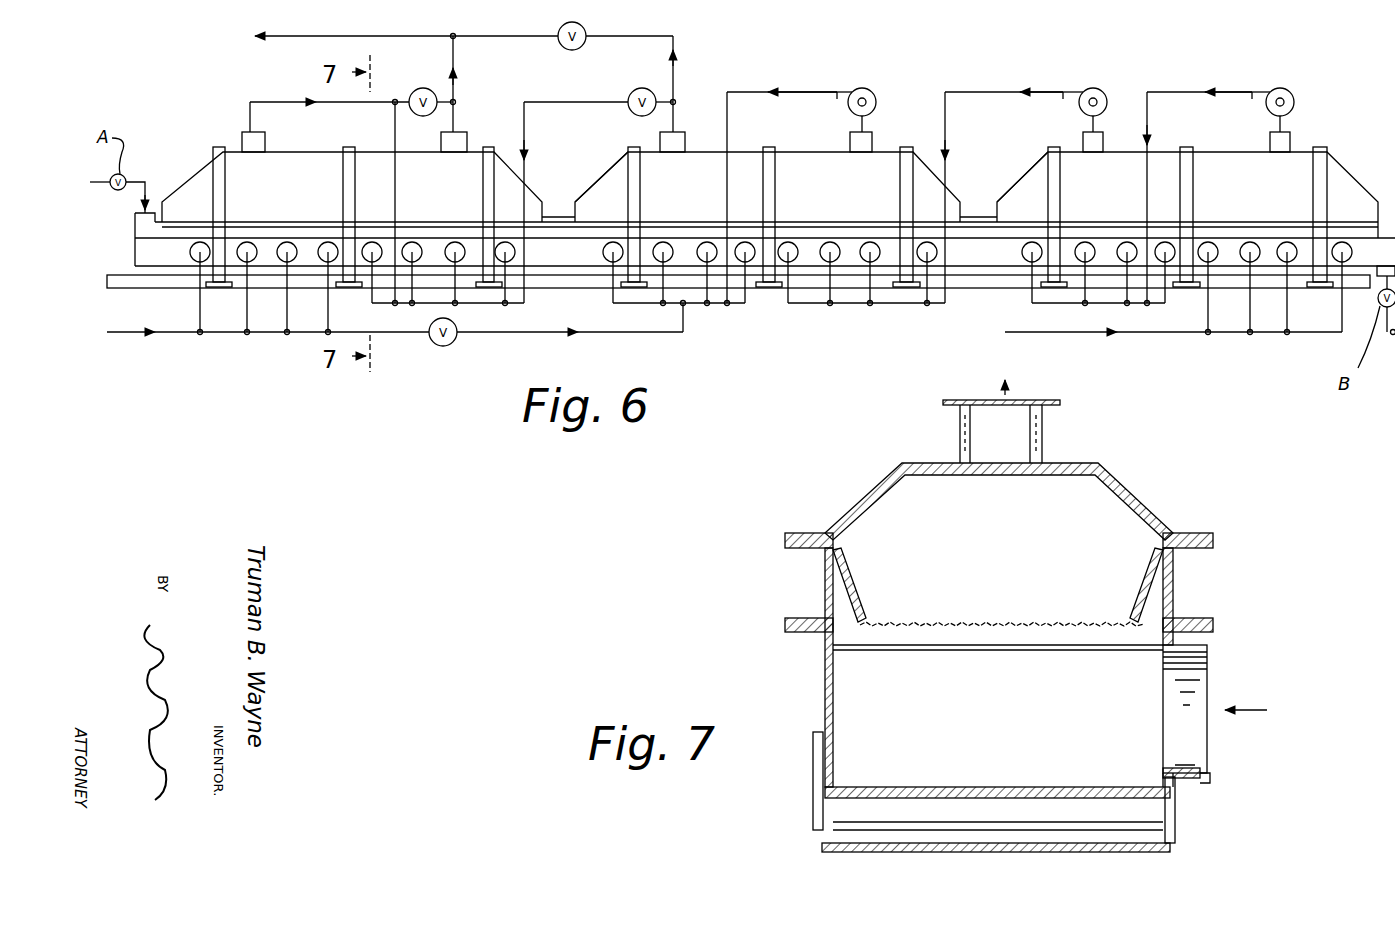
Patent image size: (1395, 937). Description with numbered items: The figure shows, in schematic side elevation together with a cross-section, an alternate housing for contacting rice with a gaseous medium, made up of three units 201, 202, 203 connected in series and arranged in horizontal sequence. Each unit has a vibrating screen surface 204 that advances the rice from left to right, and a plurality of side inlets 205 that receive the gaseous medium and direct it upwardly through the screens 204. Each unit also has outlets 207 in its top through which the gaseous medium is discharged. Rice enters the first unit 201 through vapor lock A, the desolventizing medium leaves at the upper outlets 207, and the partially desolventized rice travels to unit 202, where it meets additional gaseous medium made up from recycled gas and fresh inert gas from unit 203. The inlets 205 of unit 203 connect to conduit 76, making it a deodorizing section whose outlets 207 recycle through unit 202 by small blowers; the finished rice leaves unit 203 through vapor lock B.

In FIG. 6, the unit 201 is at (292, 152).
In FIG. 7, the unit 201 is at (1150, 500).
In FIG. 6, the unit 202 is at (815, 152).
In FIG. 6, the unit 203 is at (1225, 152).
In FIG. 6, the vibrating screen surface 204 is at (243, 224).
In FIG. 7, the vibrating screen surface 204 is at (960, 622).
In FIG. 6, the side inlets 205 is at (412, 250).
In FIG. 7, the side inlets 205 is at (1175, 765).
In FIG. 6, the outlets 207 is at (243, 136).
In FIG. 7, the outlets 207 is at (1042, 437).
In FIG. 6, the conduit 76 is at (1172, 334).